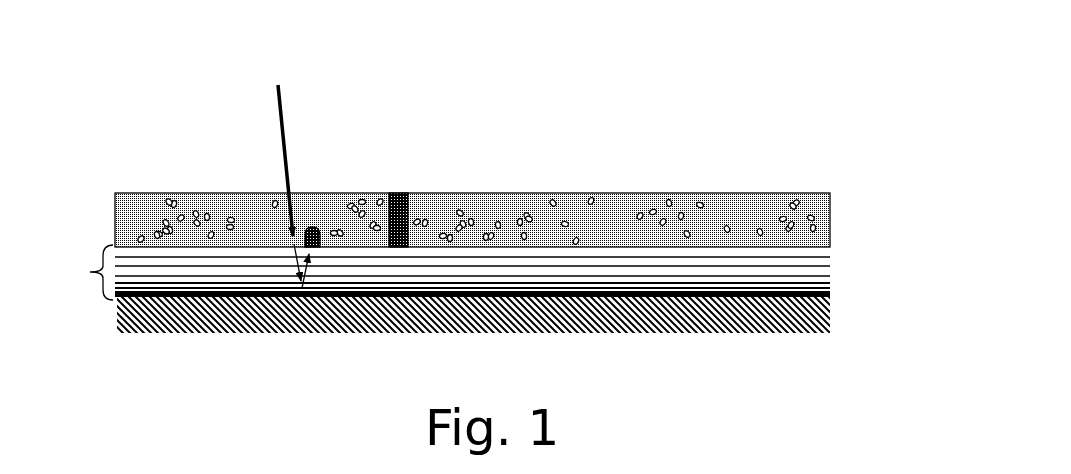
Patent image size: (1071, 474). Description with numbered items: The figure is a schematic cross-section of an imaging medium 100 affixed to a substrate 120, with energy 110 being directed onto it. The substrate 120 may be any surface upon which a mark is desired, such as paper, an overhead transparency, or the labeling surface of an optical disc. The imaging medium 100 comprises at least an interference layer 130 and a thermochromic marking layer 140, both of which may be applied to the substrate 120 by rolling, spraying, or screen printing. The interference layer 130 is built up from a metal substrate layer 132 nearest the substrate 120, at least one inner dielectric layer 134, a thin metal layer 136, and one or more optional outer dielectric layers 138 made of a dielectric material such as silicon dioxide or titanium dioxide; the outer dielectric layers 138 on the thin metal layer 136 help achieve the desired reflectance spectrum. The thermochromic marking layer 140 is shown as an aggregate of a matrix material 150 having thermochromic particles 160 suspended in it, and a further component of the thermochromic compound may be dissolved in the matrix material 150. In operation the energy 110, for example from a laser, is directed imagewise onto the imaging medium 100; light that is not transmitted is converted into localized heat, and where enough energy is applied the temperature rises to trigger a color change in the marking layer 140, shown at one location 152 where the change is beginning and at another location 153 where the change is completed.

The imaging medium 100 is at (731, 98).
The energy 110 is at (284, 131).
The substrate 120 is at (817, 320).
The interference layer 130 is at (78, 272).
The metal substrate layer 132 is at (832, 294).
The inner dielectric layer 134 is at (818, 288).
The thin metal layer 136 is at (806, 280).
The outer dielectric layer 138 is at (826, 250).
The thermochromic marking layer 140 is at (435, 188).
The matrix material 150 is at (200, 205).
The beginning color change 152 is at (311, 227).
The completed color change 153 is at (397, 194).
The thermochromic particles 160 is at (465, 212).